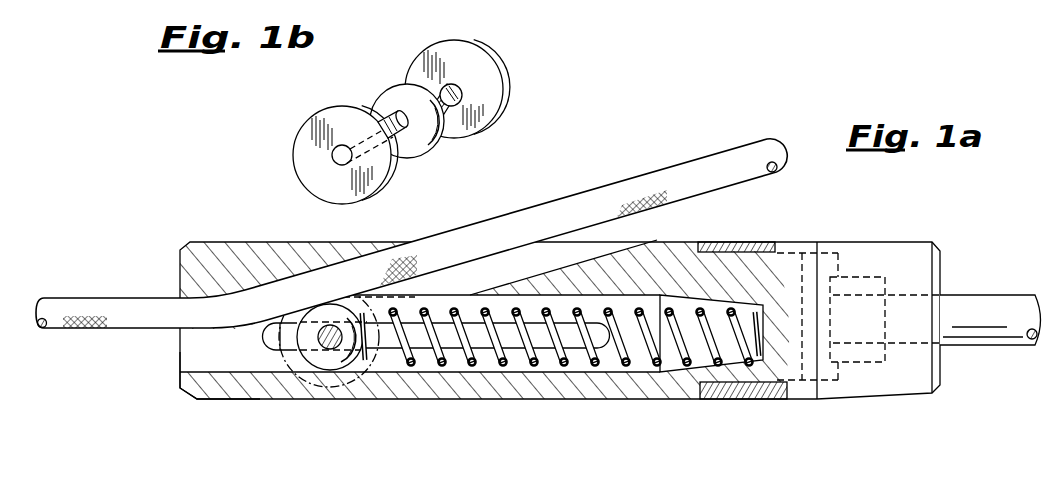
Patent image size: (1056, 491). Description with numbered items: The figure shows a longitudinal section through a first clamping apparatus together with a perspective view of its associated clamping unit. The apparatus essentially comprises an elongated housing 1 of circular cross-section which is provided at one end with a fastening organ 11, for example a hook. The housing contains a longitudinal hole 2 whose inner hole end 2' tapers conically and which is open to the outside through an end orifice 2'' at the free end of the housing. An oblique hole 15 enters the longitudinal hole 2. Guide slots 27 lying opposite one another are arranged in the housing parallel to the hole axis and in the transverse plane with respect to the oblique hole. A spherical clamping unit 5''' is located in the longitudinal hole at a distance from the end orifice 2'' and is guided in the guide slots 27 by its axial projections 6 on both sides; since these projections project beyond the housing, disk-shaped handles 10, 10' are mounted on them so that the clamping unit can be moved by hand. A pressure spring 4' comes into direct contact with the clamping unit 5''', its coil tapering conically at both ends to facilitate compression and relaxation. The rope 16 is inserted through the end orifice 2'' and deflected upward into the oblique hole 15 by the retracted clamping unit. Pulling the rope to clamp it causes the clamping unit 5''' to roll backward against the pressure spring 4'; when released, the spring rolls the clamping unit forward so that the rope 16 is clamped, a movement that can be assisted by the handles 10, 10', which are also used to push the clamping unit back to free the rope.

In FIG. 1A, the housing 1 is at (245, 243).
In FIG. 1A, the longitudinal hole 2 is at (420, 371).
In FIG. 1A, the inner hole end 2' is at (711, 370).
In FIG. 1A, the end orifice 2'' is at (184, 375).
In FIG. 1A, the pressure spring 4' is at (486, 385).
In FIG. 1A, the clamping unit 5''' is at (330, 377).
In FIG. 1B, the clamping unit 5''' is at (422, 145).
In FIG. 1A, the axial projections 6 is at (320, 344).
In FIG. 1B, the axial projections 6 is at (457, 84).
In FIG. 1A, the disk-shaped handle 10 is at (329, 369).
In FIG. 1B, the disk-shaped handle 10 is at (482, 89).
In FIG. 1B, the disk-shaped handle 10' is at (318, 155).
In FIG. 1A, the fastening organ 11 is at (985, 332).
In FIG. 1A, the oblique hole 15 is at (625, 243).
In FIG. 1A, the rope 16 is at (118, 306).
In FIG. 1A, the guide slots 27 is at (288, 347).